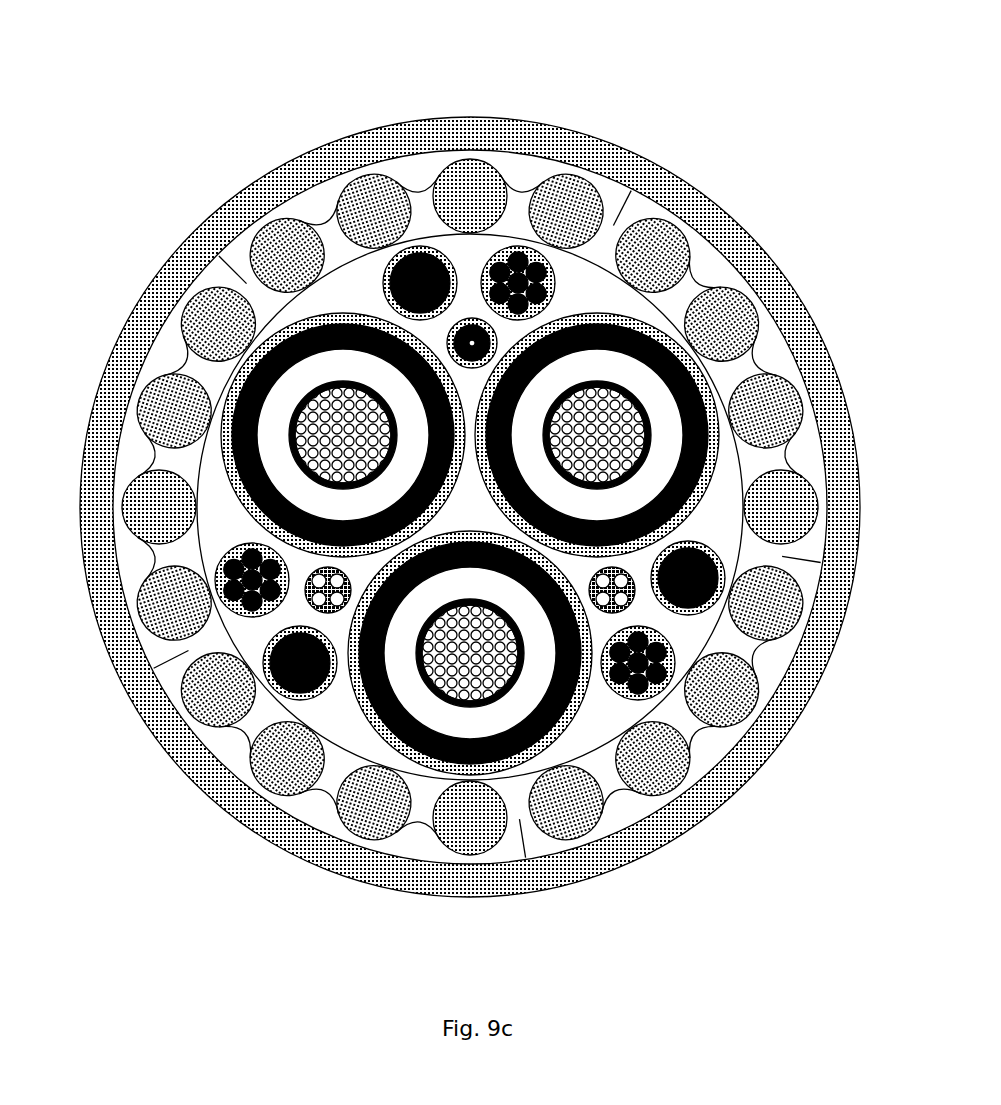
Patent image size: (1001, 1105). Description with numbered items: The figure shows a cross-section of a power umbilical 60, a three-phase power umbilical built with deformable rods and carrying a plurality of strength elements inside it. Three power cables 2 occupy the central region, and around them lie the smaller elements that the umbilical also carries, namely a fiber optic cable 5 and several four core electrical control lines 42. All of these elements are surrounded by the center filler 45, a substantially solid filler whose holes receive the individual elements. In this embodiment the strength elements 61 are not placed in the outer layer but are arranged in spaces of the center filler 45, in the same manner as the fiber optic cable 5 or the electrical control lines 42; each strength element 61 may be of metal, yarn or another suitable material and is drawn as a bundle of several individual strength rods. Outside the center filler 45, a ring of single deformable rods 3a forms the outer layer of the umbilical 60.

The power umbilical 60 is at (170, 137).
The power cable 2 is at (657, 398).
The deformable rod 3a is at (647, 767).
The fiber optic cable 5 is at (466, 318).
The electrical control line 42 is at (398, 253).
The center filler 45 is at (607, 285).
The strength element 61 is at (527, 255).